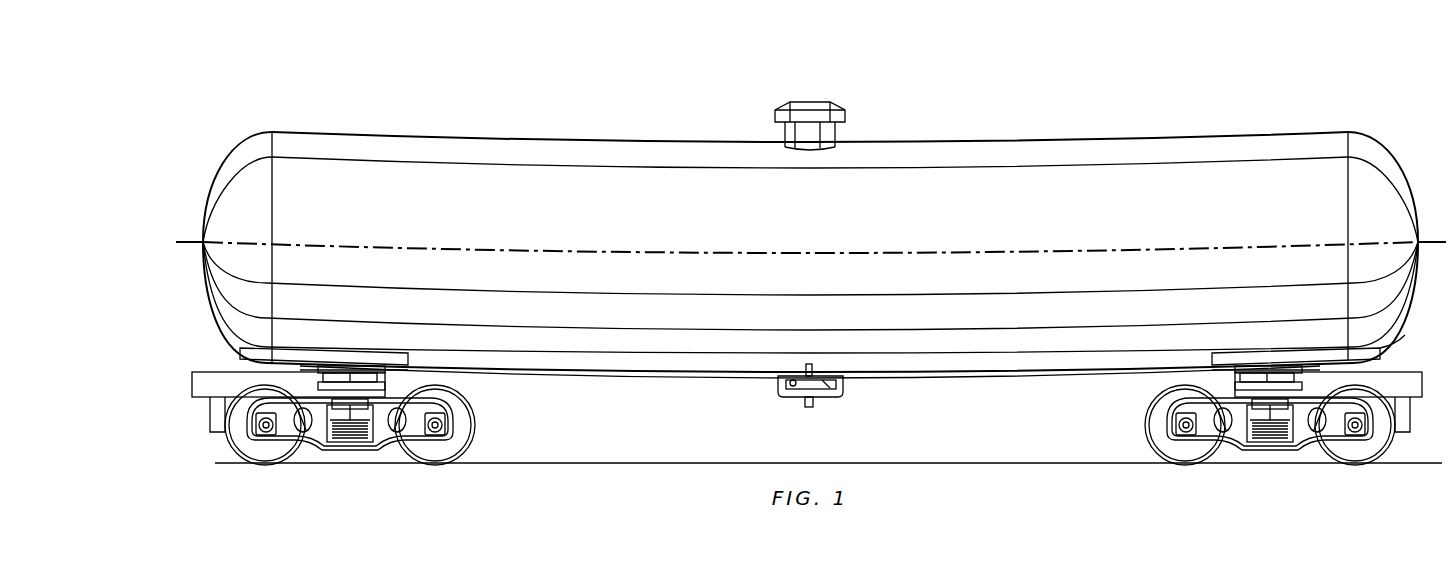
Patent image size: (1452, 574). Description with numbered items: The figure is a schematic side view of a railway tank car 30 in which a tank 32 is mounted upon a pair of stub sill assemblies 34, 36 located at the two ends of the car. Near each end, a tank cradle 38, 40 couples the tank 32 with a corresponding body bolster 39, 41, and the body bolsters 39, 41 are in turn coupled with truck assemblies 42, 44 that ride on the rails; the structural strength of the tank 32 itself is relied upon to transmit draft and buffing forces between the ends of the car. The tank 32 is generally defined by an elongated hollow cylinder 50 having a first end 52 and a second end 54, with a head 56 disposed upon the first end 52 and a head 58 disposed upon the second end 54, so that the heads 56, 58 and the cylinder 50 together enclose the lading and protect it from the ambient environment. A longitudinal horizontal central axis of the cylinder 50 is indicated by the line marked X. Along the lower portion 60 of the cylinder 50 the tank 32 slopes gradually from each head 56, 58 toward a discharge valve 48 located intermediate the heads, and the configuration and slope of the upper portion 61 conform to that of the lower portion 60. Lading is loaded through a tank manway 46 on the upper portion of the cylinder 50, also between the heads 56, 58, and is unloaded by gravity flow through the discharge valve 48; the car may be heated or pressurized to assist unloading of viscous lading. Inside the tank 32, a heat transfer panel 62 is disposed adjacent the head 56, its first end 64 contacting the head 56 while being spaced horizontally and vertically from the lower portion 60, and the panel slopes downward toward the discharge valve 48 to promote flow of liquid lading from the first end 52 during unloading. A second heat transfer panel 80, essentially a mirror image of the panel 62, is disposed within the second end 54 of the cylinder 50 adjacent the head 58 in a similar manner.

The railway tank car 30 is at (1398, 108).
The tank 32 is at (220, 152).
The stub sill assembly 34 is at (1412, 372).
The stub sill assembly 36 is at (210, 372).
The tank cradle 38 is at (1235, 372).
The body bolster 39 is at (1300, 376).
The tank cradle 40 is at (385, 372).
The body bolster 41 is at (330, 368).
The truck assembly 42 is at (1271, 464).
The truck assembly 44 is at (344, 464).
The tank manway 46 is at (773, 113).
The discharge valve 48 is at (787, 412).
The elongated hollow cylinder 50 is at (810, 273).
The first end 52 is at (1350, 148).
The second end 54 is at (268, 148).
The head 56 is at (1383, 247).
The head 58 is at (237, 247).
The lower portion 60 is at (988, 379).
The upper portion 61 is at (1090, 137).
The heat transfer panel 62 is at (1266, 355).
The first end 64 is at (1388, 340).
The second heat transfer panel 80 is at (356, 352).